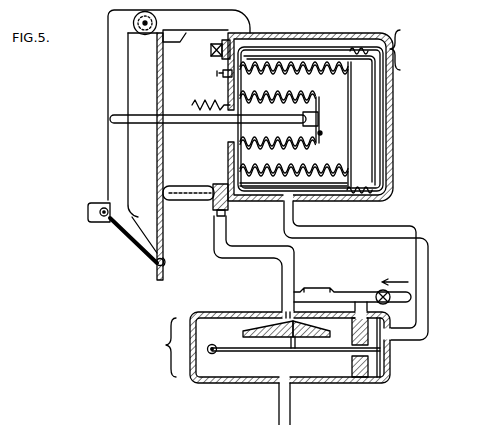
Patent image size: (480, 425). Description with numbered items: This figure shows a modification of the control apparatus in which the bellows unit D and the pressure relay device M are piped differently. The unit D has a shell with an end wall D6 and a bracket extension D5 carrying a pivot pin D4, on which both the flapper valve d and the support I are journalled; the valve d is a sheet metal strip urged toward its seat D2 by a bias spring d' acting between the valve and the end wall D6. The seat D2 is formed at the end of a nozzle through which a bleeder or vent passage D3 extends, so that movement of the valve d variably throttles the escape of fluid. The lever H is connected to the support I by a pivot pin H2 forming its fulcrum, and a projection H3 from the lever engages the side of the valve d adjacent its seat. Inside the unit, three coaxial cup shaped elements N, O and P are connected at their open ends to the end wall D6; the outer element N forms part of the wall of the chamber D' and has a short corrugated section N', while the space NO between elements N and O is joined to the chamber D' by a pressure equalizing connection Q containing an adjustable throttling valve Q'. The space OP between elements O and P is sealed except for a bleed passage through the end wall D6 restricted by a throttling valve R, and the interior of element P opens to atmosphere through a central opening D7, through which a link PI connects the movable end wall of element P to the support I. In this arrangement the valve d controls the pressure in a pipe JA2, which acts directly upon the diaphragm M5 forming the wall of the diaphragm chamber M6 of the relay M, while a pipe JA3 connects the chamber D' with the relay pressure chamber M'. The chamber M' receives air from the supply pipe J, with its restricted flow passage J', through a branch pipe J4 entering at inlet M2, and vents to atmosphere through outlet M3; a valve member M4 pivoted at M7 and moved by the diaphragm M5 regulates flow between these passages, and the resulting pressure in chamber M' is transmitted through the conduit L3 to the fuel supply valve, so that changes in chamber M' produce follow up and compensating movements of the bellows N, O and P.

The bellows unit D is at (323, 115).
The chamber D' is at (400, 191).
The seat D2 is at (165, 186).
The bleeder or vent passage D3 is at (211, 203).
The pivot pin D4 is at (143, 24).
The bracket extension D5 is at (238, 24).
The end wall D6 is at (228, 178).
The central opening D7 is at (234, 104).
The support I is at (108, 172).
The lever H is at (136, 243).
The pivot pin H2 is at (106, 221).
The projection H3 is at (165, 262).
The valve d is at (165, 156).
The bias spring d' is at (200, 98).
The pressure equalizing connection Q is at (206, 45).
The throttling valve Q' is at (203, 54).
The throttling valve R is at (220, 74).
The link PI is at (199, 121).
The chamber space OP is at (340, 110).
The cup shaped element P is at (321, 133).
The cup shaped element O is at (352, 143).
The cup shaped element N is at (329, 120).
The chamber NO is at (362, 181).
The corrugated section N' is at (378, 207).
The pipe JA2 is at (293, 264).
The pipe JA3 is at (428, 269).
The pipe J is at (352, 288).
The restricted flow passage J' is at (362, 288).
The branch pipe J4 is at (360, 306).
The pressure relay device M is at (271, 347).
The pressure chamber M' is at (290, 361).
The inlet M2 is at (390, 356).
The outlet M3 is at (390, 376).
The valve member M4 is at (322, 351).
The diaphragm M5 is at (275, 325).
The diaphragm chamber M6 is at (290, 323).
The pivot M7 is at (214, 358).
The conduit L3 is at (291, 404).